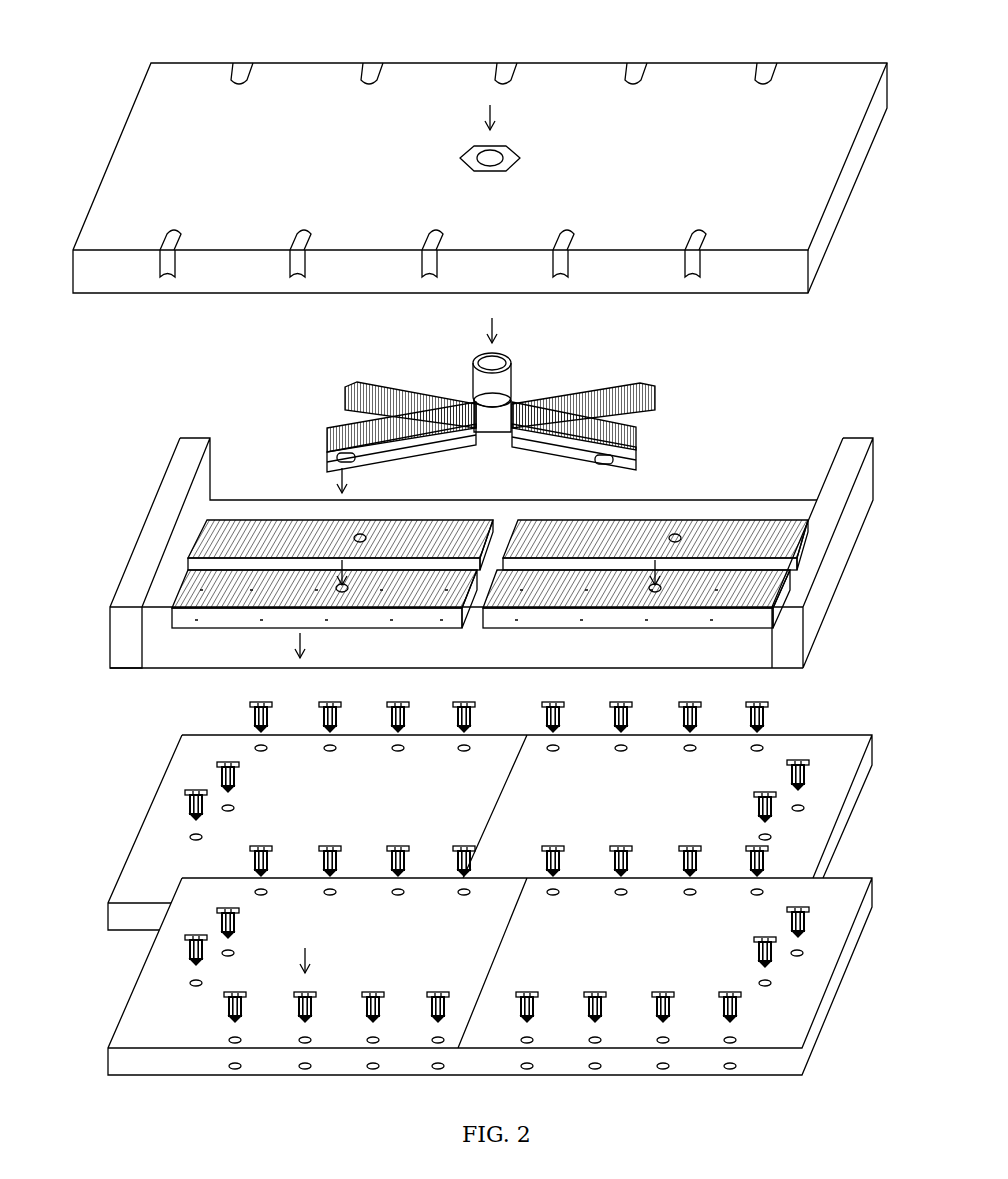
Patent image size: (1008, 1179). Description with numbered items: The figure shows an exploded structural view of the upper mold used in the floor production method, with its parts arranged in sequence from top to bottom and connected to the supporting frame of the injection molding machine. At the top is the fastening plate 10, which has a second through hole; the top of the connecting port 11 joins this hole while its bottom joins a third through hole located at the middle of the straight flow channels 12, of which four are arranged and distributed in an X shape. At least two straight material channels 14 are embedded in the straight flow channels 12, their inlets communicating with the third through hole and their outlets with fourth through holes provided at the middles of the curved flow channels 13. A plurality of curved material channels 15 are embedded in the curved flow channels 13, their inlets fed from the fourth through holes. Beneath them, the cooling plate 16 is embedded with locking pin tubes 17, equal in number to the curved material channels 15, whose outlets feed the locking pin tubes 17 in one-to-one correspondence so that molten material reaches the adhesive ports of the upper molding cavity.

The fastening plate 10 is at (158, 181).
The connecting port 11 is at (472, 372).
The straight flow channel 12 is at (355, 392).
The curved flow channel 13 is at (720, 533).
The straight material channel 14 is at (533, 446).
The curved material channel 15 is at (333, 600).
The cooling plate 16 is at (155, 863).
The locking pin tube 17 is at (188, 948).